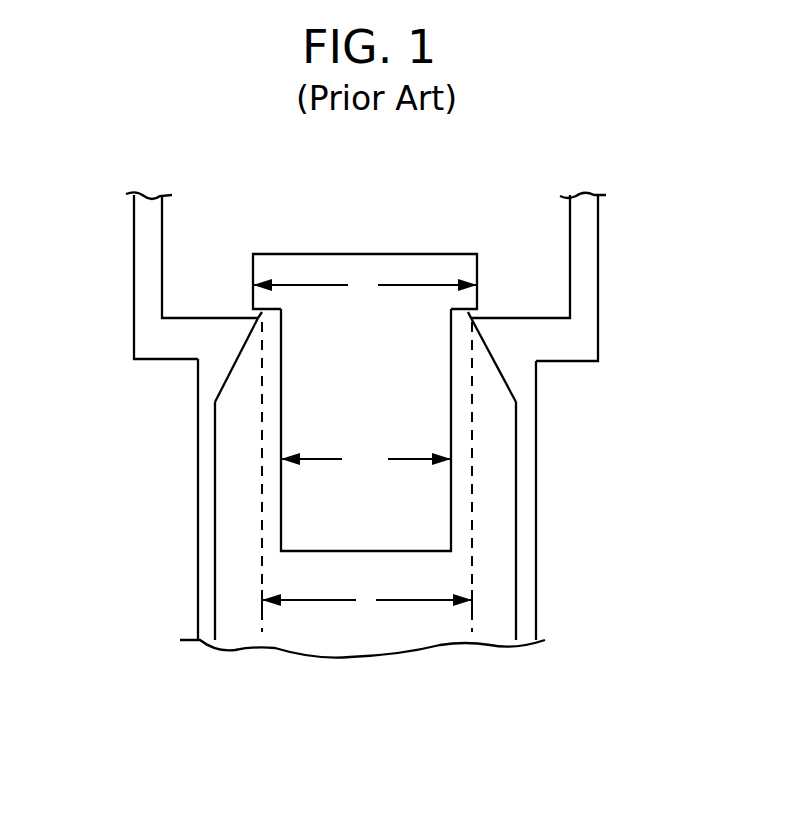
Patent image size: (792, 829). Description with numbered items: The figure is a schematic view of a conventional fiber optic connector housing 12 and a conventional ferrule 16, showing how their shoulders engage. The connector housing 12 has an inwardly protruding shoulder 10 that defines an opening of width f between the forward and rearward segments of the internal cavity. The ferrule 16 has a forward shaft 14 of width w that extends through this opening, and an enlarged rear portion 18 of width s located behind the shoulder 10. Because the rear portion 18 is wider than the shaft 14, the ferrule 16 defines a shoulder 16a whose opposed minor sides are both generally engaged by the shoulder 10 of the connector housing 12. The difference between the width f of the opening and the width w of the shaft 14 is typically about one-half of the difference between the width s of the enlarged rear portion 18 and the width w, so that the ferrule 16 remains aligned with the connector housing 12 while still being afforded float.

The shoulder of the connector housing 10 is at (222, 317).
The connector housing 12 is at (568, 475).
The shaft of the ferrule 14 is at (432, 513).
The ferrule 16 is at (450, 418).
The shoulder of the ferrule 16a is at (262, 316).
The enlarged rear portion of the ferrule 18 is at (372, 260).